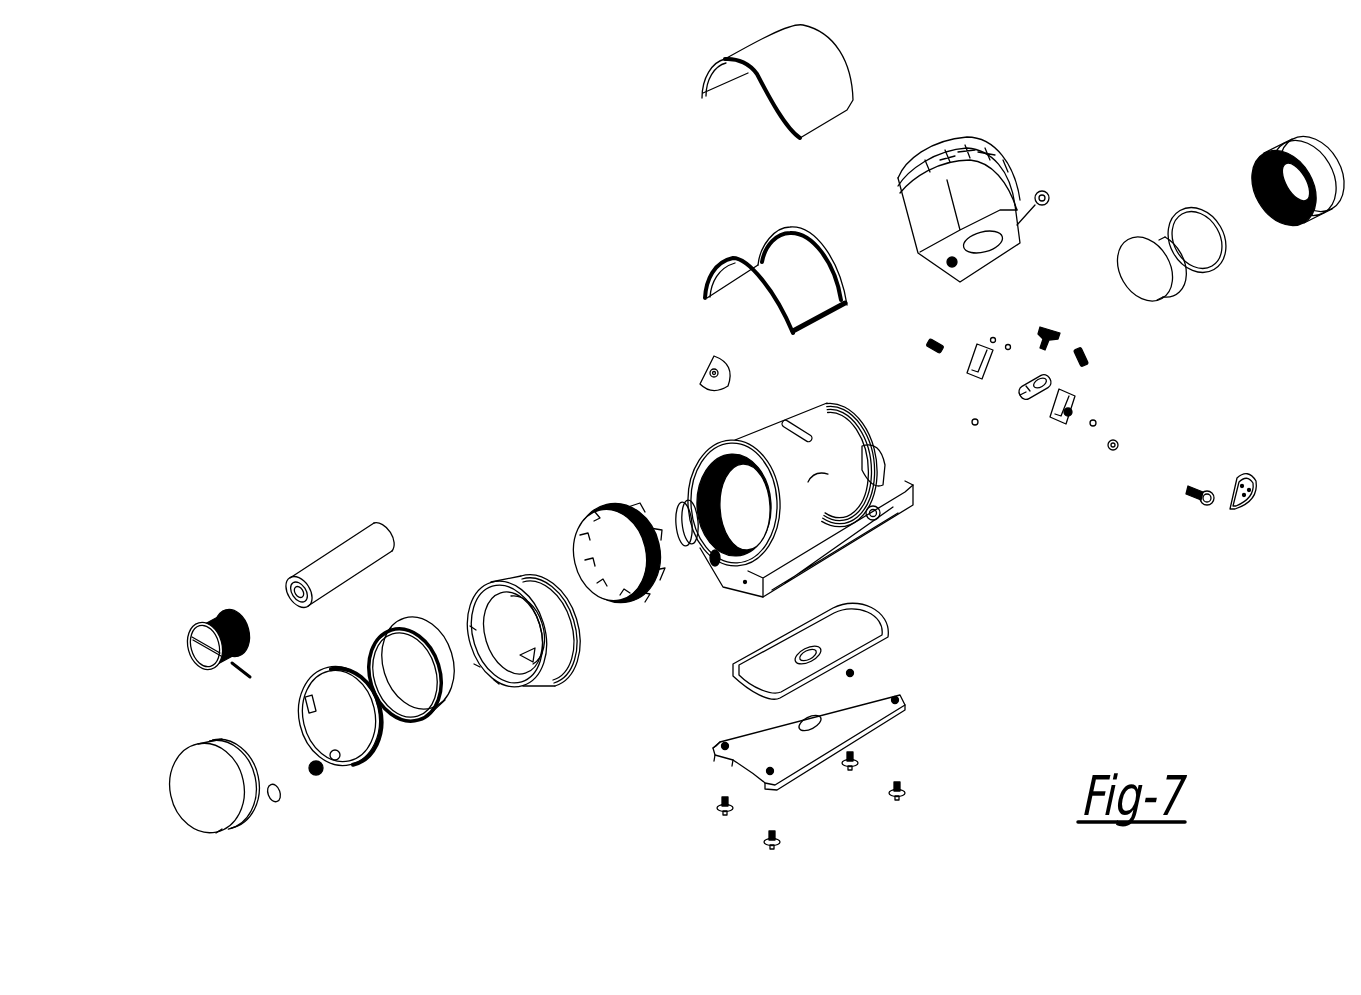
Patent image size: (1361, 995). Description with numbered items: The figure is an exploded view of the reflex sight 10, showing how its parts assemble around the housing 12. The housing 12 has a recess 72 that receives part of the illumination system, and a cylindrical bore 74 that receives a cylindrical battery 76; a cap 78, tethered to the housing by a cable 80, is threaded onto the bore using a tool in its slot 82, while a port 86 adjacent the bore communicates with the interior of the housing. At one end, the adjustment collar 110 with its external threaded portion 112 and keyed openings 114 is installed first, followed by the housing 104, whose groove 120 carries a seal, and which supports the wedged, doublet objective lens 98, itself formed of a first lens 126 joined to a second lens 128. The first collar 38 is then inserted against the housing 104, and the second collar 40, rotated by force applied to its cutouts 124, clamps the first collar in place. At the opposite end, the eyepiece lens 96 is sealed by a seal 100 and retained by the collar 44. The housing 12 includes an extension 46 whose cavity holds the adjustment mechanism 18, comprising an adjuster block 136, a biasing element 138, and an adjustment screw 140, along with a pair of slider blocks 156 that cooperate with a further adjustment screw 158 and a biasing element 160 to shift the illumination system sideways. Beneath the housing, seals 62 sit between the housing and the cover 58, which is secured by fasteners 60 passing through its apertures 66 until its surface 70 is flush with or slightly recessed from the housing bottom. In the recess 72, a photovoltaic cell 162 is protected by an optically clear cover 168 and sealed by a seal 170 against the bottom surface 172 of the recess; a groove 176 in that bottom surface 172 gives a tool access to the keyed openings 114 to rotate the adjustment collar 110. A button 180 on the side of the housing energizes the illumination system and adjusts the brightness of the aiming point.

The reflex sight 10 is at (455, 427).
The housing 12 is at (791, 497).
The adjustment mechanism 18 is at (1048, 460).
The first collar 38 is at (410, 626).
The second collar 40 is at (323, 697).
The collar 44 is at (1281, 152).
The extension 46 is at (908, 518).
The cover 58 is at (805, 717).
The fasteners 60 is at (772, 848).
The seals 62 is at (893, 623).
The apertures 66 is at (767, 772).
The surface 70 is at (780, 750).
The recess 72 is at (772, 432).
The cylindrical bore 74 is at (680, 526).
The battery 76 is at (333, 563).
The cap 78 is at (206, 644).
The cable 80 is at (250, 672).
The slot 82 is at (197, 650).
The port 86 is at (718, 570).
The eyepiece lens 96 is at (1151, 246).
The wedged, doublet objective lens 98 is at (222, 815).
The seal 100 is at (1188, 207).
The housing 104 is at (545, 607).
The adjustment collar 110 is at (664, 606).
The external threaded portion 112 is at (663, 558).
The keyed openings 114 is at (644, 567).
The groove 120 is at (568, 640).
The cutouts 124 is at (331, 753).
The first lens 126 is at (227, 811).
The second lens 128 is at (248, 806).
The adjuster block 136 is at (1033, 402).
The biasing element 138 is at (1089, 361).
The adjustment screw 140 is at (1047, 325).
The slider blocks 156 is at (979, 347).
The adjustment screw 158 is at (1211, 505).
The biasing element 160 is at (927, 341).
The photovoltaic cell 162 is at (984, 133).
The cover 168 is at (814, 78).
The seal 170 is at (733, 259).
The bottom surface 172 is at (828, 478).
The groove 176 is at (815, 433).
The button 180 is at (710, 357).